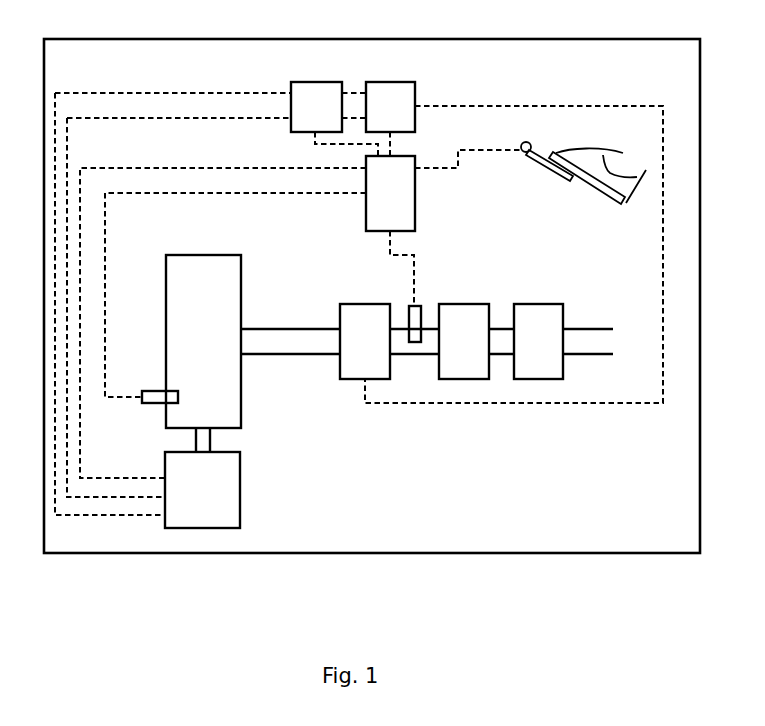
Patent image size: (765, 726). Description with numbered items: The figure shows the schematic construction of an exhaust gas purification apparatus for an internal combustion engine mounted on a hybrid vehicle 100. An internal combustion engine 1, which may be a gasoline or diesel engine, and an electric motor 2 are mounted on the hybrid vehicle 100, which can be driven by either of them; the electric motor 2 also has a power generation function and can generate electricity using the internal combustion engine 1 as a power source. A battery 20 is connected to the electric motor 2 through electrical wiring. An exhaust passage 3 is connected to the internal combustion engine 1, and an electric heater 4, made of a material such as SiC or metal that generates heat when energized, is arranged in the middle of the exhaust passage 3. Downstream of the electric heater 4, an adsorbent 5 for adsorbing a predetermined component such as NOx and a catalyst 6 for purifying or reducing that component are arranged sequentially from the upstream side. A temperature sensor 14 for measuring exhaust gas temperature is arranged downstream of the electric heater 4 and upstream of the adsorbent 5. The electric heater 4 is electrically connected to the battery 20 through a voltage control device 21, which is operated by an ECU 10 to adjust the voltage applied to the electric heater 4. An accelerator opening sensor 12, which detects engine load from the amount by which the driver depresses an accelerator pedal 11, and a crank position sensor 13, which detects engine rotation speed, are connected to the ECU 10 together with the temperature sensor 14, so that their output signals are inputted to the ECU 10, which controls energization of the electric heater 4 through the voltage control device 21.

The hybrid vehicle 100 is at (263, 553).
The internal combustion engine 1 is at (242, 378).
The electric motor 2 is at (241, 490).
The exhaust passage 3 is at (262, 328).
The electric heater 4 is at (358, 360).
The adsorbent 5 is at (463, 304).
The catalyst 6 is at (538, 304).
The ECU 10 is at (415, 218).
The accelerator pedal 11 is at (592, 185).
The accelerator opening sensor 12 is at (522, 153).
The crank position sensor 13 is at (153, 405).
The temperature sensor 14 is at (422, 310).
The battery 20 is at (318, 82).
The voltage control device 21 is at (392, 82).